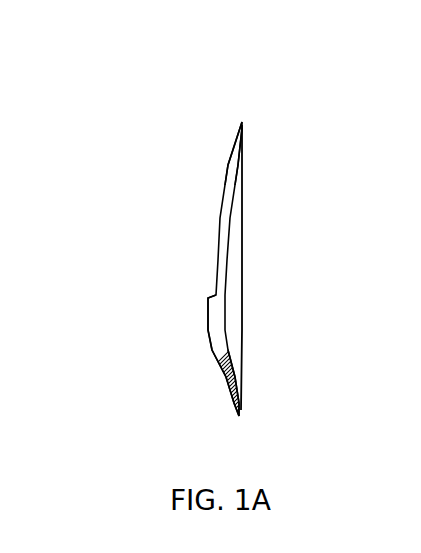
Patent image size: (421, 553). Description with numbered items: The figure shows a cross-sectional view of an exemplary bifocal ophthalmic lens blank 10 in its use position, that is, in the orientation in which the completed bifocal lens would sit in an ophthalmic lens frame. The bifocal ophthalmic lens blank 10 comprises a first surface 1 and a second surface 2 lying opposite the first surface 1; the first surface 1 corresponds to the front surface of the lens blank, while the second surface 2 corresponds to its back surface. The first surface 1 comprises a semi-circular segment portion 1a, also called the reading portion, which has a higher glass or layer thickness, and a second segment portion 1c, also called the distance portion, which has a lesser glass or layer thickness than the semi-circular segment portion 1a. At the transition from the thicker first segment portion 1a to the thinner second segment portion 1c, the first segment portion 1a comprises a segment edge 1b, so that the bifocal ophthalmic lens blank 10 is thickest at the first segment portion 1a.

The bifocal ophthalmic lens blank 10 is at (115, 105).
The first surface 1 is at (220, 213).
The semi-circular segment portion 1a is at (212, 350).
The segment edge 1b is at (209, 297).
The second segment portion 1c is at (228, 172).
The second surface 2 is at (230, 210).